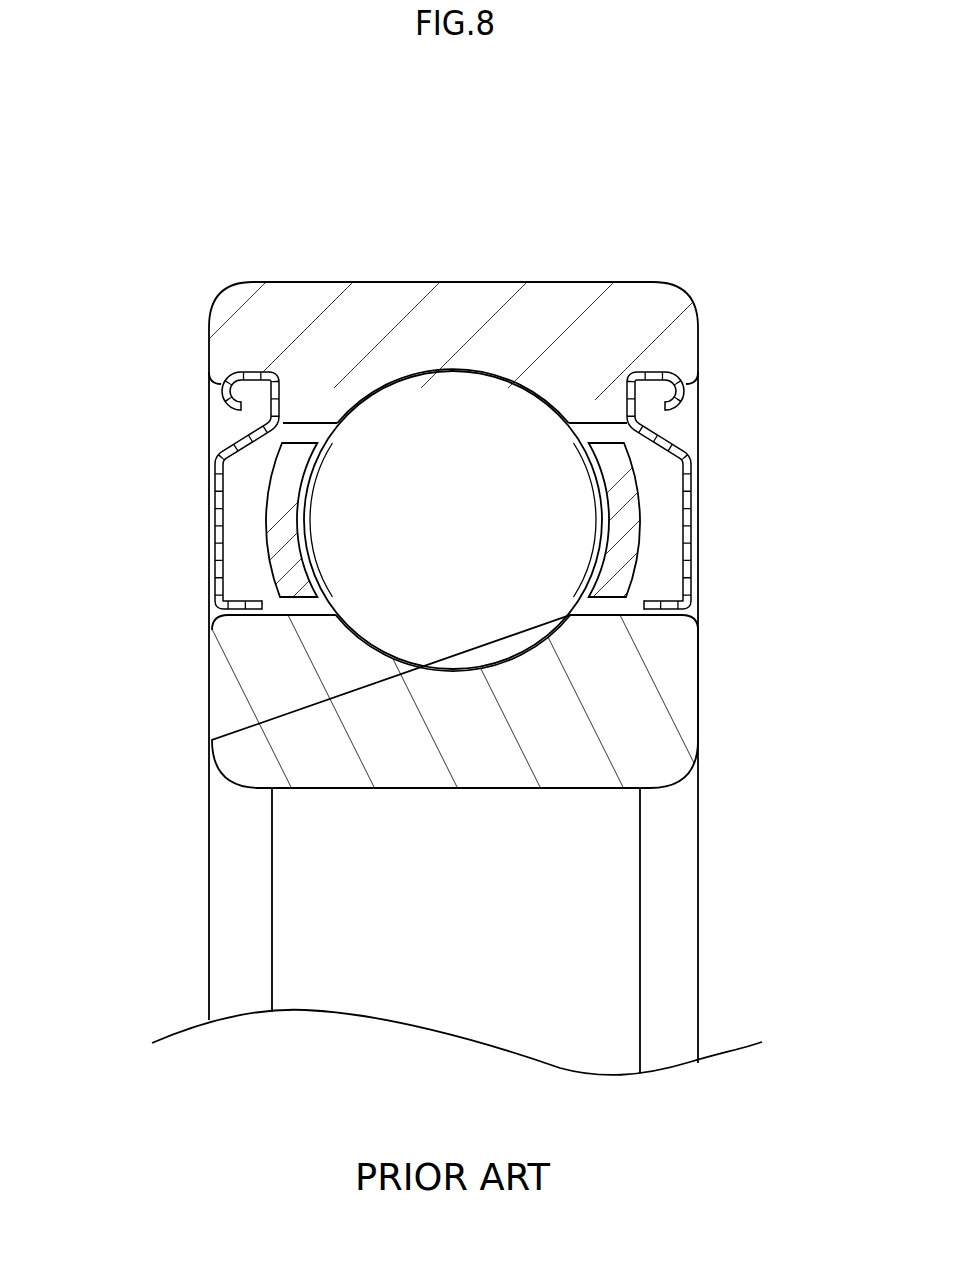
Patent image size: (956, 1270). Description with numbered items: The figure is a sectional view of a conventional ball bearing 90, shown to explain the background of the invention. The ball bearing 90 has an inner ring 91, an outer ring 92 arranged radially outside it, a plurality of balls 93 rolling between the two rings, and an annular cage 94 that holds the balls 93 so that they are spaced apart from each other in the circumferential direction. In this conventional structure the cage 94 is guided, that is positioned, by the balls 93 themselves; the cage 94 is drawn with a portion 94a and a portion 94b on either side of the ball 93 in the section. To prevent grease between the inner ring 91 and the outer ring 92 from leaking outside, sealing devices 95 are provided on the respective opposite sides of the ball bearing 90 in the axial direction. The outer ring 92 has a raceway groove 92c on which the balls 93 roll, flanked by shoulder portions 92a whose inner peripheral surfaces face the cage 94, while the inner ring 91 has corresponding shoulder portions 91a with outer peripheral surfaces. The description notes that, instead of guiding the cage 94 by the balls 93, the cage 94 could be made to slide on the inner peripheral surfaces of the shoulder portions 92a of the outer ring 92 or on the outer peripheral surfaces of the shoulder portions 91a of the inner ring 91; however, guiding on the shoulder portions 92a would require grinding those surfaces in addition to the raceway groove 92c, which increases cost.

The ball bearing 90 is at (548, 282).
The inner ring 91 is at (210, 641).
The shoulder portions 91a is at (253, 627).
The outer ring 92 is at (208, 324).
The shoulder portions 92a is at (313, 407).
The raceway groove 92c is at (402, 412).
The balls 93 is at (465, 407).
The annular cage 94 is at (268, 483).
The annular portion of cage 94a is at (620, 503).
The pocket portion of cage 94b is at (268, 503).
The sealing devices 95 is at (222, 548).